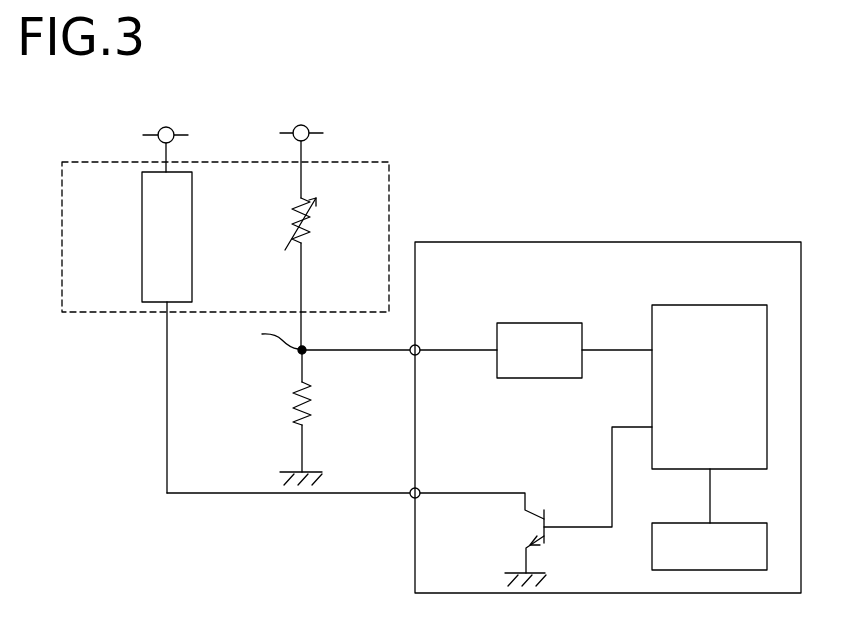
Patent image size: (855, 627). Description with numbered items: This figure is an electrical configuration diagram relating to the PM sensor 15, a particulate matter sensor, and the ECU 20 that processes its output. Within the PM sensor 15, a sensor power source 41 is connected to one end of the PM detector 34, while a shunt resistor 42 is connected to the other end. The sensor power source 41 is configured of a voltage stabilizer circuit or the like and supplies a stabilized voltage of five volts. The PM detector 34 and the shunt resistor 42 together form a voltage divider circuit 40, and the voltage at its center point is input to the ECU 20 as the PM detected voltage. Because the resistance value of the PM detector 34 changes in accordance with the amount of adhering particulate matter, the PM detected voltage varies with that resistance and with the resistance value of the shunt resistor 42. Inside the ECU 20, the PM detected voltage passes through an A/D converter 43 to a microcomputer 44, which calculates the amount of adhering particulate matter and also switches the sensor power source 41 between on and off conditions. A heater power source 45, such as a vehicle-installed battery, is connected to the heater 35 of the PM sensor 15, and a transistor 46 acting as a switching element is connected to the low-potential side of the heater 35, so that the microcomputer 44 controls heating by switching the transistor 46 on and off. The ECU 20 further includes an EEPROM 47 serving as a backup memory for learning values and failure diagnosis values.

The PM sensor 15 is at (91, 161).
The ECU 20 is at (752, 241).
The PM detector 34 is at (299, 211).
The heater 35 is at (142, 216).
The voltage divider circuit 40 is at (248, 377).
The sensor power source 41 is at (301, 125).
The shunt resistor 42 is at (299, 387).
The A/D converter 43 is at (537, 322).
The microcomputer 44 is at (709, 304).
The heater power source 45 is at (166, 127).
The transistor 46 is at (546, 511).
The EEPROM 47 is at (745, 522).